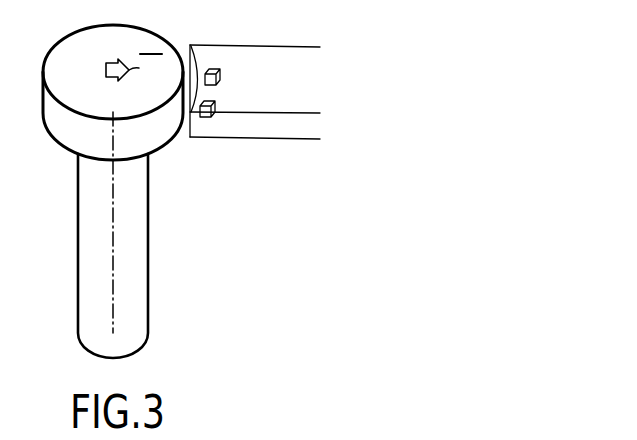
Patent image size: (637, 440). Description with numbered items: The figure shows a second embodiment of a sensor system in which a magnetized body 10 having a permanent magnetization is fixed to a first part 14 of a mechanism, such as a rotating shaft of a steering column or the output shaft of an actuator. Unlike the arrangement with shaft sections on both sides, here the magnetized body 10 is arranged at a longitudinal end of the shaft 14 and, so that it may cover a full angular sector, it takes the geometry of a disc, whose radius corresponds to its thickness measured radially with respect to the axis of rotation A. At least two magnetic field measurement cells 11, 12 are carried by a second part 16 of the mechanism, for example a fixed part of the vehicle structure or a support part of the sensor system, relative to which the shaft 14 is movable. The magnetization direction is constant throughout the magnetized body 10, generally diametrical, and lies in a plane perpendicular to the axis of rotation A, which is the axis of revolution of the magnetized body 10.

The magnetized body 10 is at (56, 119).
The magnetic field measurement cell 11 is at (221, 67).
The magnetic field measurement cell 12 is at (217, 101).
The first part of a mechanism 14 is at (135, 268).
The second part of the mechanism 16 is at (273, 52).
The axis of rotation A is at (113, 318).